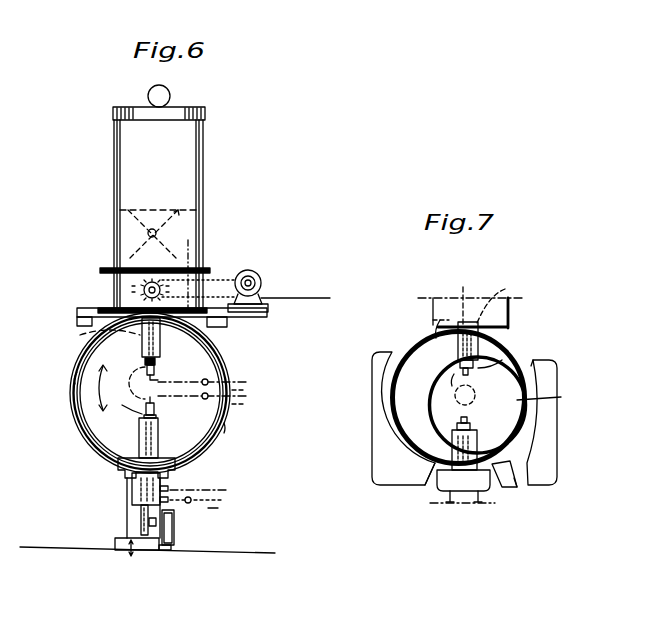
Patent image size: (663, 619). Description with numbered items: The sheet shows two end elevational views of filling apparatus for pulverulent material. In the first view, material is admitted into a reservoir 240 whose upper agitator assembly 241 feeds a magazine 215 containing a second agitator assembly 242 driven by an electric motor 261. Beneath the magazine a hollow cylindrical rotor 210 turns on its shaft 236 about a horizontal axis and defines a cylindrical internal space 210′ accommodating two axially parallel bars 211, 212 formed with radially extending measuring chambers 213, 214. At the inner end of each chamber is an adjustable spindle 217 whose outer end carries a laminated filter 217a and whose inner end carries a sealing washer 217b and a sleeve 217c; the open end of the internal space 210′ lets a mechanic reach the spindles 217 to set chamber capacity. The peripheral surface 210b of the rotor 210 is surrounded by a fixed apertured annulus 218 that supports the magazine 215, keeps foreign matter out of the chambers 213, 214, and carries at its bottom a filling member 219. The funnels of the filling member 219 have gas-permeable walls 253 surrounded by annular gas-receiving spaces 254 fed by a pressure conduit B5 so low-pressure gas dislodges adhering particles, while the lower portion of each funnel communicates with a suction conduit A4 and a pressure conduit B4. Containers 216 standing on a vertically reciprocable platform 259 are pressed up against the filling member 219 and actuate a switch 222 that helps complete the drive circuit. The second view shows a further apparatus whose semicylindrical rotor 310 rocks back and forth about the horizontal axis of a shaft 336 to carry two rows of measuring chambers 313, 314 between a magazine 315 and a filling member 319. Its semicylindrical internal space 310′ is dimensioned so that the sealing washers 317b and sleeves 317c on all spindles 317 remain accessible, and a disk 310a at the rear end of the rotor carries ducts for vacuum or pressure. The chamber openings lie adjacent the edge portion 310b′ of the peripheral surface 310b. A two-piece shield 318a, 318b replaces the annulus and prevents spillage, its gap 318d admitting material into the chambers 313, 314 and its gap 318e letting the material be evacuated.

In FIG. 6, the reservoir 240 is at (203, 130).
In FIG. 6, the upper agitator assembly 241 is at (185, 213).
In FIG. 6, the magazine 215 is at (196, 245).
In FIG. 6, the second agitator assembly 242 is at (146, 286).
In FIG. 6, the electric motor 261 is at (257, 271).
In FIG. 6, the spindle 217 is at (80, 340).
In FIG. 6, the annulus 218 is at (216, 337).
In FIG. 6, the rotor shaft 236 is at (141, 373).
In FIG. 6, the chambered bar 211 is at (160, 349).
In FIG. 6, the measuring chamber 213 is at (158, 368).
In FIG. 6, the sleeve 217c is at (204, 379).
In FIG. 6, the cylindrical internal space 210′ is at (78, 378).
In FIG. 6, the sealing washer 217b is at (116, 388).
In FIG. 6, the hollow cylindrical rotor 210 is at (66, 416).
In FIG. 6, the filter 217a is at (145, 442).
In FIG. 6, the chambered bar 212 is at (159, 414).
In FIG. 6, the measuring chamber 214 is at (159, 434).
In FIG. 6, the peripheral surface 210b is at (223, 425).
In FIG. 6, the funnel wall 253 is at (122, 466).
In FIG. 6, the annular gas-receiving space 254 is at (134, 491).
In FIG. 6, the filling member 219 is at (175, 471).
In FIG. 6, the pressure conduit B5 is at (226, 490).
In FIG. 6, the suction conduit A4 is at (222, 500).
In FIG. 6, the pressure conduit B4 is at (218, 508).
In FIG. 6, the container 216 is at (140, 525).
In FIG. 6, the electric switch 222 is at (175, 525).
In FIG. 6, the vertically reciprocable platform 259 is at (147, 547).
In FIG. 7, the peripheral surface 310b is at (445, 338).
In FIG. 7, the measuring chamber 313 is at (447, 295).
In FIG. 7, the edge portion 310b′ is at (518, 297).
In FIG. 7, the spindle 317 is at (456, 342).
In FIG. 7, the magazine 315 is at (511, 325).
In FIG. 7, the semicylindrical rotor 310 is at (398, 357).
In FIG. 7, the sealing washer 317b is at (482, 370).
In FIG. 7, the gap 318d is at (548, 362).
In FIG. 7, the sleeve 317c is at (456, 377).
In FIG. 7, the shaft 336 is at (474, 394).
In FIG. 7, the disk 310a is at (562, 410).
In FIG. 7, the semicylindrical internal space 310′ is at (432, 407).
In FIG. 7, the shield piece 318b is at (550, 439).
In FIG. 7, the shield piece 318a is at (378, 464).
In FIG. 7, the gap 318e is at (428, 488).
In FIG. 7, the measuring chamber 314 is at (462, 478).
In FIG. 7, the filling member 319 is at (492, 490).